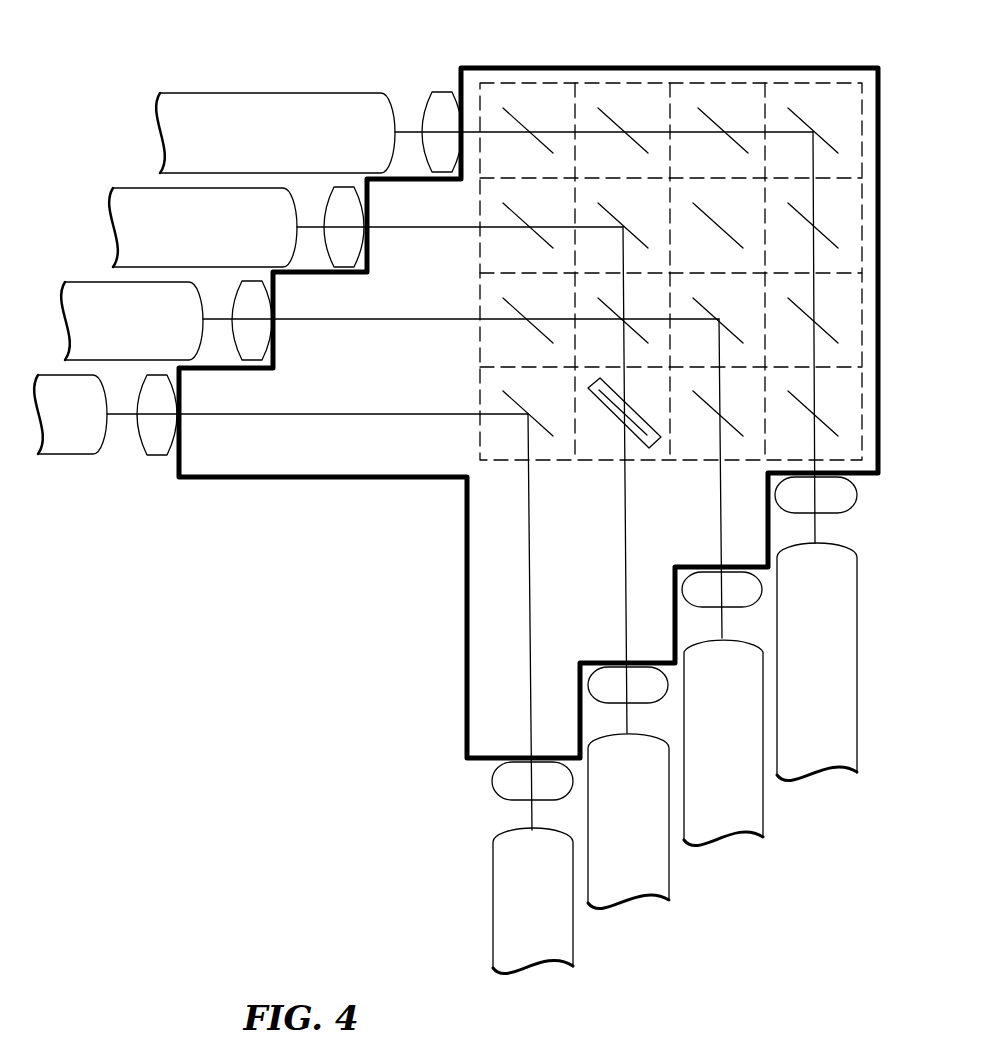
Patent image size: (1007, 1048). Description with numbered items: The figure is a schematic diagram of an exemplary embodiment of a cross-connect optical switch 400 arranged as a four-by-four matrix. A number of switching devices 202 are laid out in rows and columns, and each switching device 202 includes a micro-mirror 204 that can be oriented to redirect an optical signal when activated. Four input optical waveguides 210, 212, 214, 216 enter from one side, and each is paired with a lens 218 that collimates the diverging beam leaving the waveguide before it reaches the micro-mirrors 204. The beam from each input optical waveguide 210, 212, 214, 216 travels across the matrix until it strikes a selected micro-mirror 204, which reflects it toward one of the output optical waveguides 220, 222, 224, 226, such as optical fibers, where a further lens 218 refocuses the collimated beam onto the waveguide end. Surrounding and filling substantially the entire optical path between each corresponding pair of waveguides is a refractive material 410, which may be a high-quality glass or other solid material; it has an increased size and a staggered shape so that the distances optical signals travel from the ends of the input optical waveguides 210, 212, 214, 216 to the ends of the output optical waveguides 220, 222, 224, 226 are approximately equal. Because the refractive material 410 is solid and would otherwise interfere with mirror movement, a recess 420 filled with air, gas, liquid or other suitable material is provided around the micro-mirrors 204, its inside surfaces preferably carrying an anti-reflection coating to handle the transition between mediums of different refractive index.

The switching device 202 is at (812, 82).
The micro-mirror 204 is at (608, 112).
The input optical waveguide 210 is at (158, 141).
The input optical waveguide 212 is at (113, 236).
The input optical waveguide 214 is at (65, 300).
The input optical waveguide 216 is at (53, 455).
The lens 218 is at (438, 70).
The output optical waveguide 220 is at (550, 963).
The output optical waveguide 222 is at (653, 897).
The output optical waveguide 224 is at (747, 837).
The output optical waveguide 226 is at (840, 772).
The cross-connect optical switch 400 is at (300, 627).
The refractive material 410 is at (533, 66).
The recess 420 is at (623, 419).